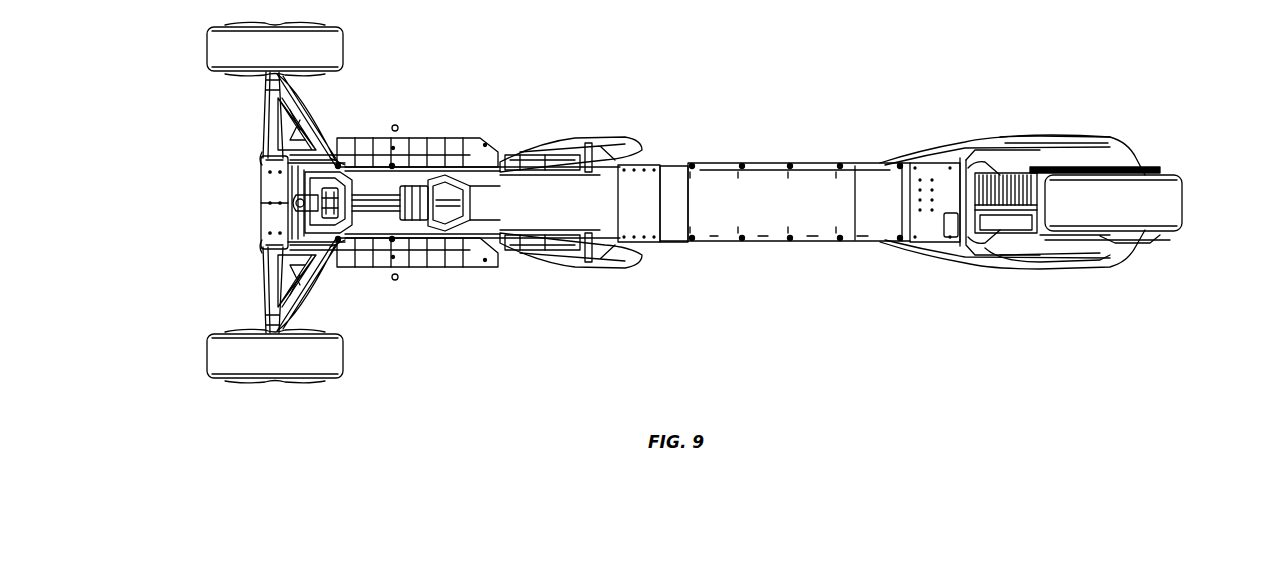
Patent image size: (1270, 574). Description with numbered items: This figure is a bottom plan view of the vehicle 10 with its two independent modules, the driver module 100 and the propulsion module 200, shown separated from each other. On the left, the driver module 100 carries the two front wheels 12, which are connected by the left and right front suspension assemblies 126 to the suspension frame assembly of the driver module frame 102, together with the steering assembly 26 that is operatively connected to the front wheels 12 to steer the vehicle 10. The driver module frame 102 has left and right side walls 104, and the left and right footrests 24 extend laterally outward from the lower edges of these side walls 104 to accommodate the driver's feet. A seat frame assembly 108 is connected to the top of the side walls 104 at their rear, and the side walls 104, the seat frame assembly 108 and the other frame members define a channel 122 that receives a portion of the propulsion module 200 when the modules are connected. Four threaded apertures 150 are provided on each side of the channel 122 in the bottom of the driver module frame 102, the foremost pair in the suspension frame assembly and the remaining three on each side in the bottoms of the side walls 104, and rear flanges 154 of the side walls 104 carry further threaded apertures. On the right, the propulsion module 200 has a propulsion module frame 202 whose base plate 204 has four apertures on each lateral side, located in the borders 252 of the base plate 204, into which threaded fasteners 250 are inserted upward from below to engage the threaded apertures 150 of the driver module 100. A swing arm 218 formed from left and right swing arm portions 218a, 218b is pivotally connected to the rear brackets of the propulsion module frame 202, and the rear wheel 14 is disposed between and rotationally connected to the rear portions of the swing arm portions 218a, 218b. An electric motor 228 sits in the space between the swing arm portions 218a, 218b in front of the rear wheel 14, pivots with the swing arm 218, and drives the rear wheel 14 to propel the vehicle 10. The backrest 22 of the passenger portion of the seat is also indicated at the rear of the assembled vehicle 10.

The vehicle 10 is at (768, 104).
The front wheels 12 is at (325, 44).
The rear wheel 14 is at (1172, 195).
The backrest 22 is at (1155, 254).
The footrests 24 is at (455, 150).
The steering assembly 26 is at (390, 183).
The driver module 100 is at (545, 282).
The driver module frame 102 is at (425, 302).
The left and right side walls 104 is at (565, 140).
The seat frame assembly 108 is at (668, 235).
The channel 122 is at (497, 190).
The front suspension assemblies 126 is at (248, 107).
The threaded apertures 150 is at (340, 163).
The rear flanges 154 is at (535, 155).
The propulsion module 200 is at (1016, 285).
The propulsion module frame 202 is at (868, 140).
The base plate 204 is at (795, 192).
The swing arm 218 is at (1068, 270).
The left swing arm portion 218a is at (1055, 140).
The right swing arm portion 218b is at (1037, 260).
The electric motor 228 is at (1012, 173).
The threaded fasteners 250 is at (742, 163).
The borders 252 is at (855, 163).